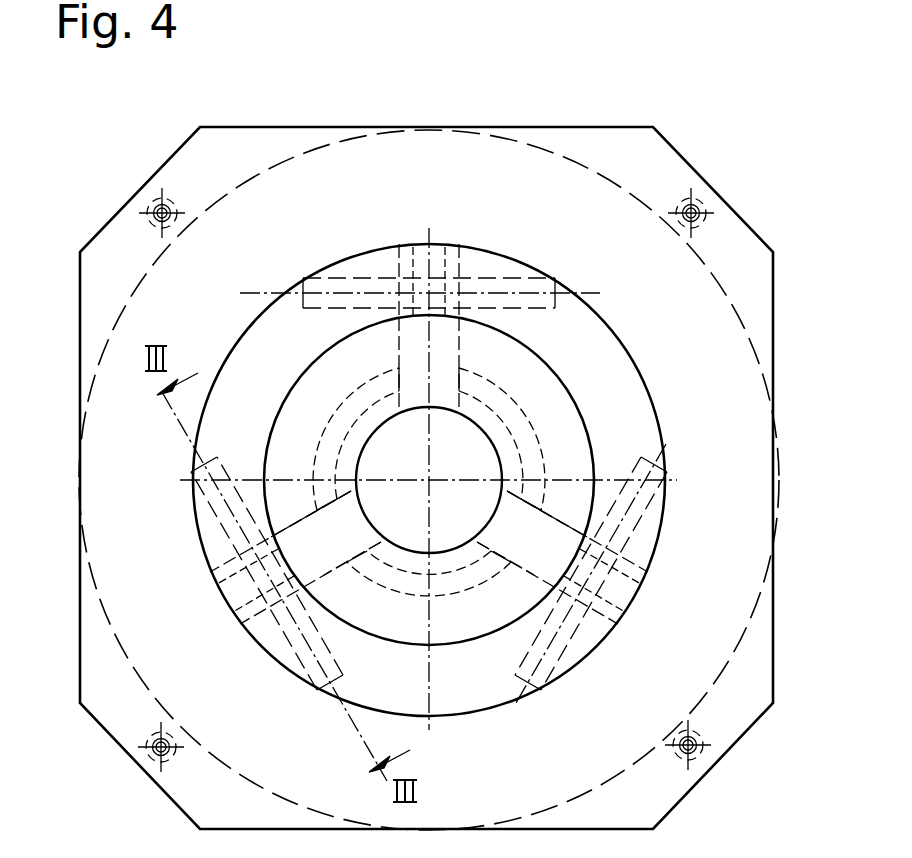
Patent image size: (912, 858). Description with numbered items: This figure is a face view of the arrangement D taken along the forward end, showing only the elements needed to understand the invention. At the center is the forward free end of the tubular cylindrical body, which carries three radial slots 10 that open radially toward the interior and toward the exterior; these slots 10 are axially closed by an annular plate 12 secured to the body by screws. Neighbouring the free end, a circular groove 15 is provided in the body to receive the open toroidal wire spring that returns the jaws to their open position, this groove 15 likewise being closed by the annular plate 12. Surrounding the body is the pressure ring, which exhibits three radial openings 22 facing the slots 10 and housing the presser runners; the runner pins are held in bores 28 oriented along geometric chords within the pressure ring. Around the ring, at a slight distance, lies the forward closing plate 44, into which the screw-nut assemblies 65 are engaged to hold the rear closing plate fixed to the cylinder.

The arrangement D is at (609, 88).
The radial slots 10 is at (447, 348).
The annular plate 12 is at (565, 468).
The circular groove 15 is at (528, 422).
The radial openings 22 is at (400, 240).
The bores 28 is at (503, 285).
The forward closing plate 44 is at (733, 693).
The screw-nut assemblies 65 is at (147, 195).